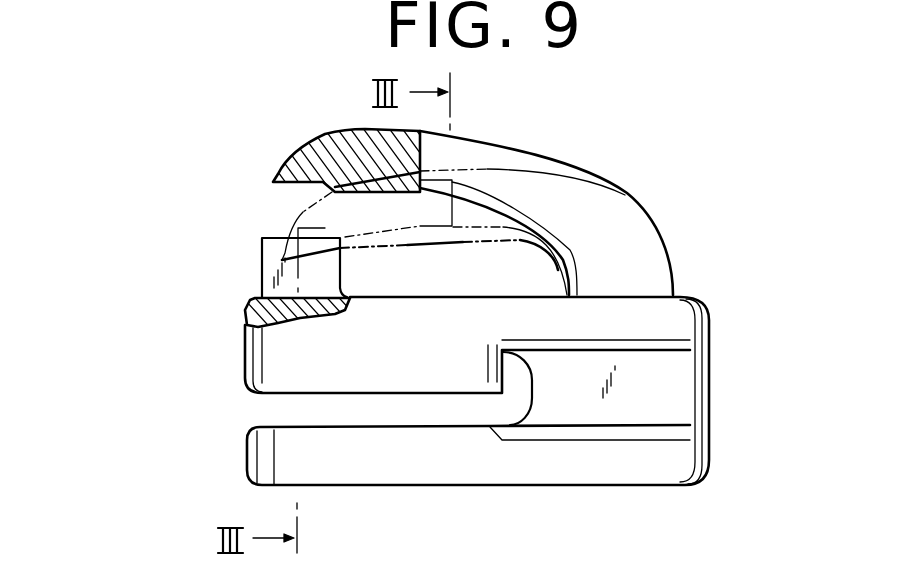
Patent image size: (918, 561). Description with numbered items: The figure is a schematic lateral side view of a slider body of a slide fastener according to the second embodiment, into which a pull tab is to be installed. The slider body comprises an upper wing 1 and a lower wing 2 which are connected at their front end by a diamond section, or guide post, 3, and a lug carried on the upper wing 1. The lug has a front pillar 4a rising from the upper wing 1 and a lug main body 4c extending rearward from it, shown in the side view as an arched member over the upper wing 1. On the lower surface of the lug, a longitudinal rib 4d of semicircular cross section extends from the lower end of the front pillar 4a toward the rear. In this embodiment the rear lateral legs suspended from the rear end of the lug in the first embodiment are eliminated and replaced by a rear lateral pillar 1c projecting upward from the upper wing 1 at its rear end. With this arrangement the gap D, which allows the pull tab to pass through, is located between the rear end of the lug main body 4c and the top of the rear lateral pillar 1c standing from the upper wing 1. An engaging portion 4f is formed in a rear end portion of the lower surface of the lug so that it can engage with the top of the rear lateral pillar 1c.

The upper wing 1 is at (670, 317).
The rear lateral pillar 1c is at (262, 268).
The lower wing 2 is at (430, 460).
The diamond section (guide post) 3 is at (670, 392).
The front pillar 4a is at (627, 263).
The lug main body 4c is at (470, 157).
The longitudinal rib 4d is at (530, 213).
The engaging portion 4f is at (273, 183).
The gap D is at (293, 214).